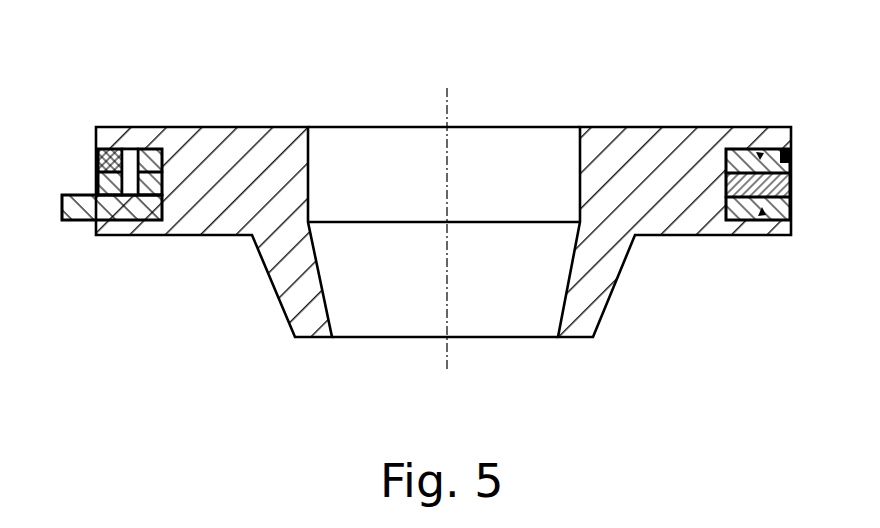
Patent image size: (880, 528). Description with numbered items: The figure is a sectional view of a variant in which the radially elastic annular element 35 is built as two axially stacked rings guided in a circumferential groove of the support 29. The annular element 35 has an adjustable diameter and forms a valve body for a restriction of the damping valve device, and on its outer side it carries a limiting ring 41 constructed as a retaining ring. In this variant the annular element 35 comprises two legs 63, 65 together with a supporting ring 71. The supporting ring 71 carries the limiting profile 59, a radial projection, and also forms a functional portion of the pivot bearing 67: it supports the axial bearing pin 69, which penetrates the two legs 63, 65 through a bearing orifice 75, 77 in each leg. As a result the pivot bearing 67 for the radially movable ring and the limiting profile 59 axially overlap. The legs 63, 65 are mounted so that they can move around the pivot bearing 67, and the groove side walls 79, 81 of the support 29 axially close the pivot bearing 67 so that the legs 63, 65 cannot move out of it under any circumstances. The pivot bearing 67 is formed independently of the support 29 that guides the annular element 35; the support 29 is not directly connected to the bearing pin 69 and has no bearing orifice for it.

The support 29 is at (617, 158).
The annular element 35 is at (791, 188).
The limiting ring 41 is at (794, 153).
The limiting profile 59 is at (82, 274).
The leg 63 is at (136, 186).
The leg 65 is at (168, 160).
The pivot bearing 67 is at (140, 138).
The bearing pin 69 is at (100, 160).
The supporting ring 71 is at (110, 224).
The bearing orifice 75 is at (132, 153).
The bearing orifice 77 is at (115, 212).
The groove side wall 79 is at (743, 150).
The groove side wall 81 is at (750, 203).